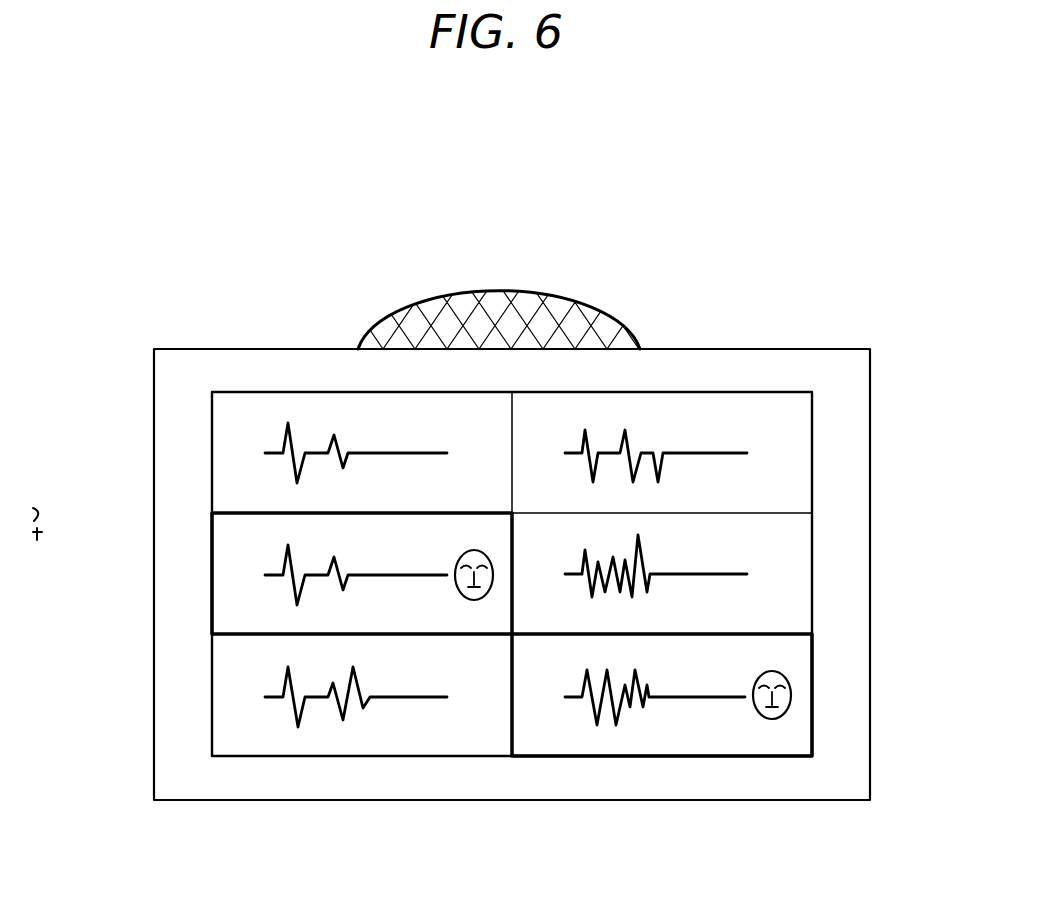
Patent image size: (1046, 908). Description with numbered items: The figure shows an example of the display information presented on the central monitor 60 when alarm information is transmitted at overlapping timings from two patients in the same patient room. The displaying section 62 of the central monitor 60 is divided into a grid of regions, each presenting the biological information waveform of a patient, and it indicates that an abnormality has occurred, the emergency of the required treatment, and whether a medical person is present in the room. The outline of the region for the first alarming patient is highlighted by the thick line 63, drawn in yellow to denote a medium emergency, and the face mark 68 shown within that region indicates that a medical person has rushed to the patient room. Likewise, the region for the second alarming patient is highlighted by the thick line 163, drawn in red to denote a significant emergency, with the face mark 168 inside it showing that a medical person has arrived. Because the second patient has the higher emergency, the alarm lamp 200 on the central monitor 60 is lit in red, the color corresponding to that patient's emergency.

The central monitor 60 is at (250, 336).
The alarm lamp 200 is at (545, 293).
The face mark 68 is at (467, 549).
The thick line 63 is at (212, 540).
The displaying section 62 is at (502, 558).
The thick line 163 is at (703, 757).
The face mark 168 is at (792, 691).